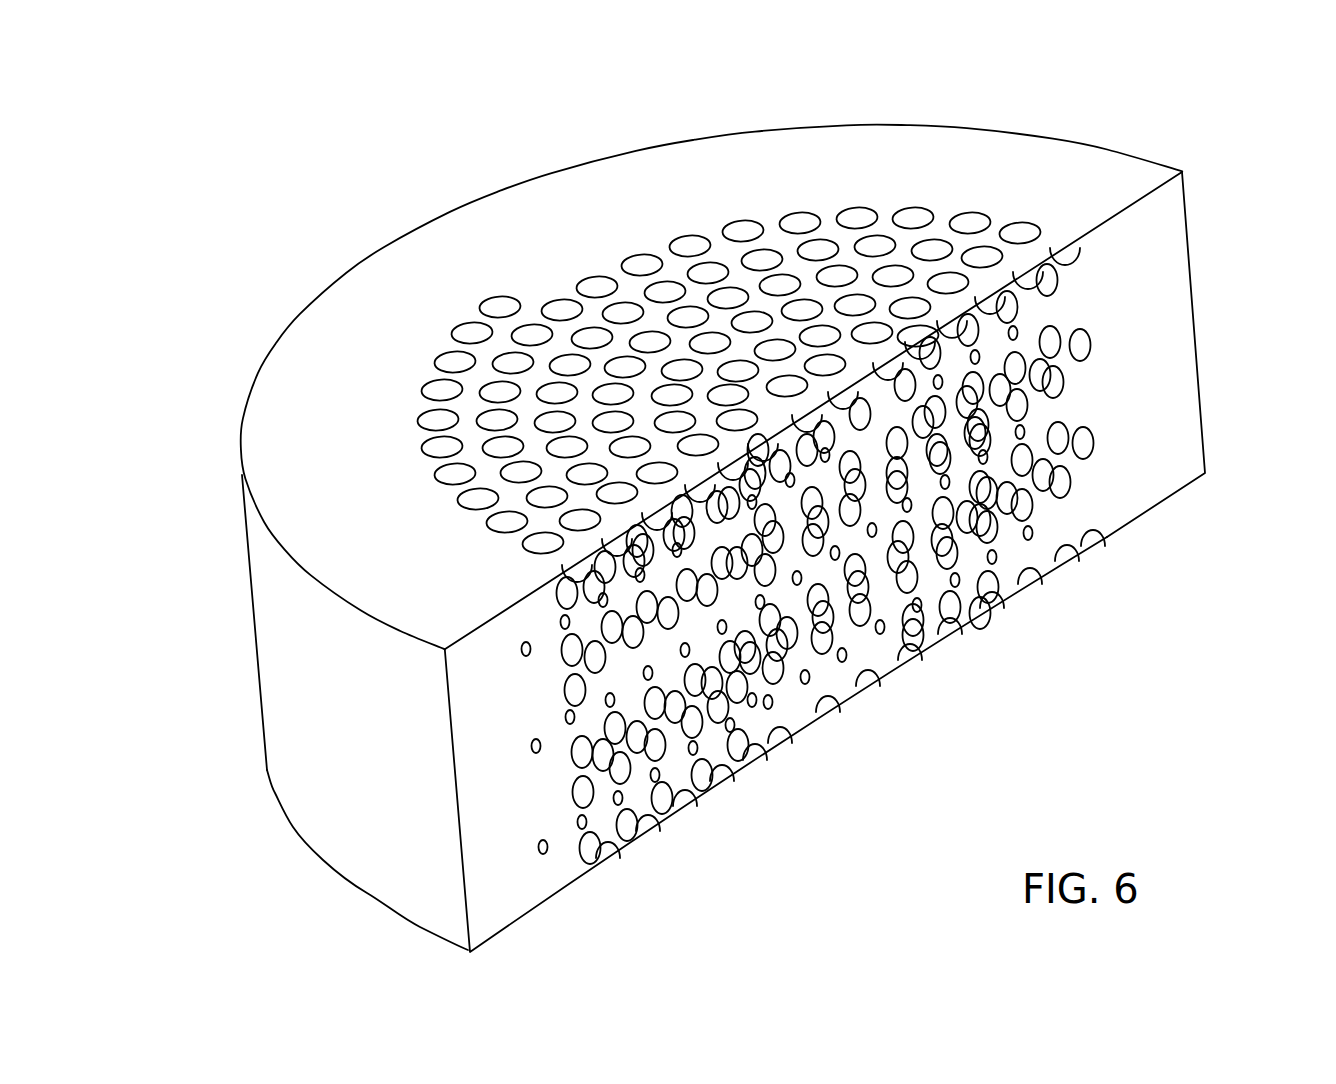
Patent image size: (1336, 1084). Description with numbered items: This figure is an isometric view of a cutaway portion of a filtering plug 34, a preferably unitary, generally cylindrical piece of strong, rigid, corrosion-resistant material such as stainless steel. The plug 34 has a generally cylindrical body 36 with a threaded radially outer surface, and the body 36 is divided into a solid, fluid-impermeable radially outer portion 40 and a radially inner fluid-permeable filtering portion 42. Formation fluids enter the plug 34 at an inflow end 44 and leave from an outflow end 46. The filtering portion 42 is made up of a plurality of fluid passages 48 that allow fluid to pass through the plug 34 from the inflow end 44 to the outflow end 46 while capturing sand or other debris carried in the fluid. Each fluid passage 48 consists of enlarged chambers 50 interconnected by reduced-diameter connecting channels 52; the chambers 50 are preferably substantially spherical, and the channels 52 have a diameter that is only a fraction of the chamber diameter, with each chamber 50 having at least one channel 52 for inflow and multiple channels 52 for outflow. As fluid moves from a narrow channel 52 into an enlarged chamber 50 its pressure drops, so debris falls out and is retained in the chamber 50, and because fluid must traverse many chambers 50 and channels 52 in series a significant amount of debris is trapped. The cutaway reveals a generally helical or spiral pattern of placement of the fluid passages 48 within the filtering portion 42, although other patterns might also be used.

The filtering plug 34 is at (210, 567).
The cylindrical body 36 is at (1168, 227).
The radially outer portion 40 is at (1060, 162).
The filtering portion 42 is at (805, 683).
The inflow end 44 is at (556, 190).
The outflow end 46 is at (928, 652).
The fluid passages 48 is at (805, 218).
The chambers 50 is at (500, 305).
The connecting channels 52 is at (1032, 533).